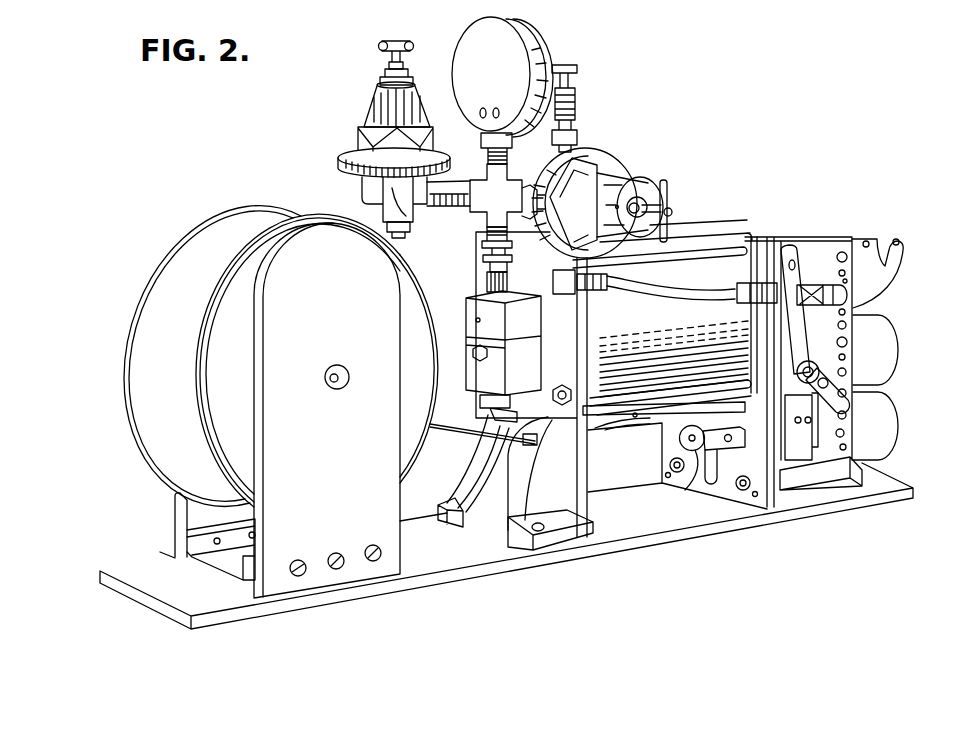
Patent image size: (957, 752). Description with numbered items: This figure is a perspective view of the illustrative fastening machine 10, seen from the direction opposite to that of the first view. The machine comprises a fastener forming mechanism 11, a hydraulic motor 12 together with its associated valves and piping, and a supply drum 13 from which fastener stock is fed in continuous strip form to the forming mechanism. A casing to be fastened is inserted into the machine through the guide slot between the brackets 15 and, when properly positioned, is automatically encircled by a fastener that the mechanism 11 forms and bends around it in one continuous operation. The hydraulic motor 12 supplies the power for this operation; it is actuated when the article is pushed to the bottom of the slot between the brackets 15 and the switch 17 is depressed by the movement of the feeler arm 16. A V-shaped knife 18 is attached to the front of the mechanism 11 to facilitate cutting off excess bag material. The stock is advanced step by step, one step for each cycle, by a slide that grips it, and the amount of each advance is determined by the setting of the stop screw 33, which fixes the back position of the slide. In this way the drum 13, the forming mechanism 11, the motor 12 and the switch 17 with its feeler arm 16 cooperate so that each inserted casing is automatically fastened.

The fastening machine 10 is at (553, 607).
The fastener forming mechanism 11 is at (821, 237).
The hydraulic motor 12 is at (687, 238).
The supply drum 13 is at (142, 329).
The brackets 15 is at (888, 332).
The feeler arm 16 is at (677, 432).
The switch 17 is at (533, 351).
The V-shaped knife 18 is at (860, 237).
The stop screw 33 is at (658, 490).